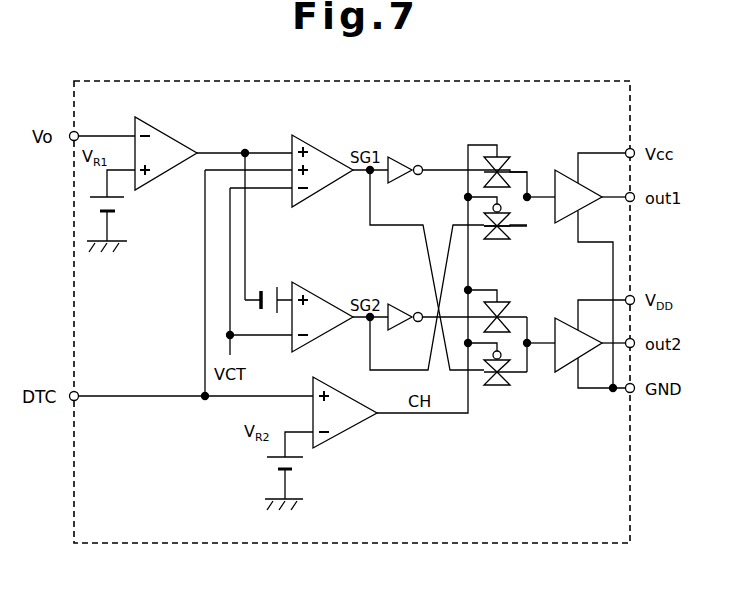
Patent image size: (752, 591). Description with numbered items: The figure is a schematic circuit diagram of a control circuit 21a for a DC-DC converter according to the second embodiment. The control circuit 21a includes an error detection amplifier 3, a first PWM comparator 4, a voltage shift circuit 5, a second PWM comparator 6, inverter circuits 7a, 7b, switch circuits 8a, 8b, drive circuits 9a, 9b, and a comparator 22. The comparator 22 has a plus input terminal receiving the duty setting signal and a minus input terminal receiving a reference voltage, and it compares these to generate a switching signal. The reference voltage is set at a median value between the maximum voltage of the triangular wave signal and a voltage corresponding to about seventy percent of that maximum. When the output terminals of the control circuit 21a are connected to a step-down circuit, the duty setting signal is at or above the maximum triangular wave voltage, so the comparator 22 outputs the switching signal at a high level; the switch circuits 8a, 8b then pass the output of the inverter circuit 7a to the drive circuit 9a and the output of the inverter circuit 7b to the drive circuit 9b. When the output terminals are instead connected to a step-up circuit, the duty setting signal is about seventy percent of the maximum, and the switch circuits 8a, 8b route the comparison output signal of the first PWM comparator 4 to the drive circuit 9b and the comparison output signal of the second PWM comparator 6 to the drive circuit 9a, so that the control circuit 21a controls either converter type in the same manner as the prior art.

The error detection amplifier 3 is at (168, 132).
The first PWM comparator 4 is at (326, 140).
The voltage shift circuit 5 is at (276, 285).
The second PWM comparator 6 is at (324, 288).
The inverter circuit 7a is at (400, 156).
The inverter circuit 7b is at (395, 302).
The switch circuit 8a is at (532, 148).
The switch circuit 8b is at (518, 408).
The drive circuit 9a is at (573, 223).
The drive circuit 9b is at (568, 372).
The control circuit 21a is at (600, 81).
The comparator 22 is at (341, 438).